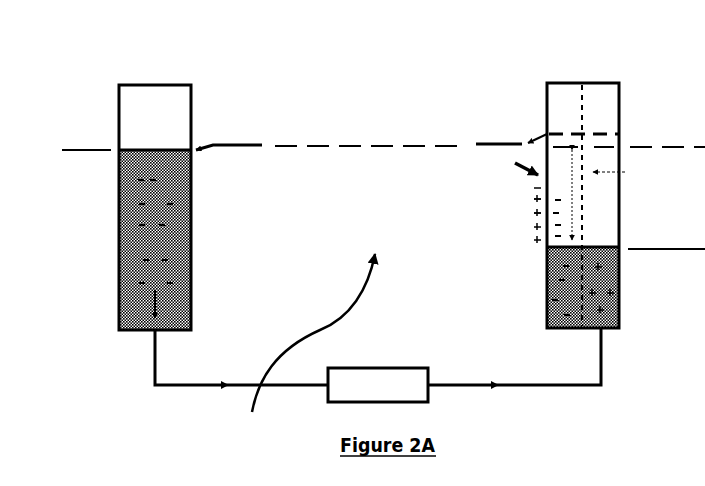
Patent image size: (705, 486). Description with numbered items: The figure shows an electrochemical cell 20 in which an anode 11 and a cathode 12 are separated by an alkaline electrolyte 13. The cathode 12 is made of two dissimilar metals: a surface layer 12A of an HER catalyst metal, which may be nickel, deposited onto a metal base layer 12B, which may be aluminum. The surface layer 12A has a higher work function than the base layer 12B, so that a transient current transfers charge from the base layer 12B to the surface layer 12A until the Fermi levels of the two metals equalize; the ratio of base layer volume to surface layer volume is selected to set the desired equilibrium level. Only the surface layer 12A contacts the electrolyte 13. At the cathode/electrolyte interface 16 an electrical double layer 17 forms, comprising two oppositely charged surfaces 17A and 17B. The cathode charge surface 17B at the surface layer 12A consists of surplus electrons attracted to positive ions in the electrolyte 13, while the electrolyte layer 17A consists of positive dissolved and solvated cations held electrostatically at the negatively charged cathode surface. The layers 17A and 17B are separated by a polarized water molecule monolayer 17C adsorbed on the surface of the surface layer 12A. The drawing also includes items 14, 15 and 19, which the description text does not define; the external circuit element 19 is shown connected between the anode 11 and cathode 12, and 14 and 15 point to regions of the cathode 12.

The electrochemical cell 20 is at (90, 76).
The anode 11 is at (155, 197).
The cathode 12 is at (583, 196).
The surface layer 12A is at (538, 320).
The metal base layer 12B is at (630, 318).
The alkaline electrolyte 13 is at (306, 345).
The positive charge region 14 is at (617, 326).
The negative charge region 15 is at (567, 320).
The cathode/electrolyte interface 16 is at (517, 164).
The electrical double layer 17 is at (526, 227).
The electrolyte layer 17A is at (527, 215).
The cathode charge surface 17B is at (533, 199).
The polarized water molecule monolayer 17C is at (536, 187).
The load 19 is at (378, 365).